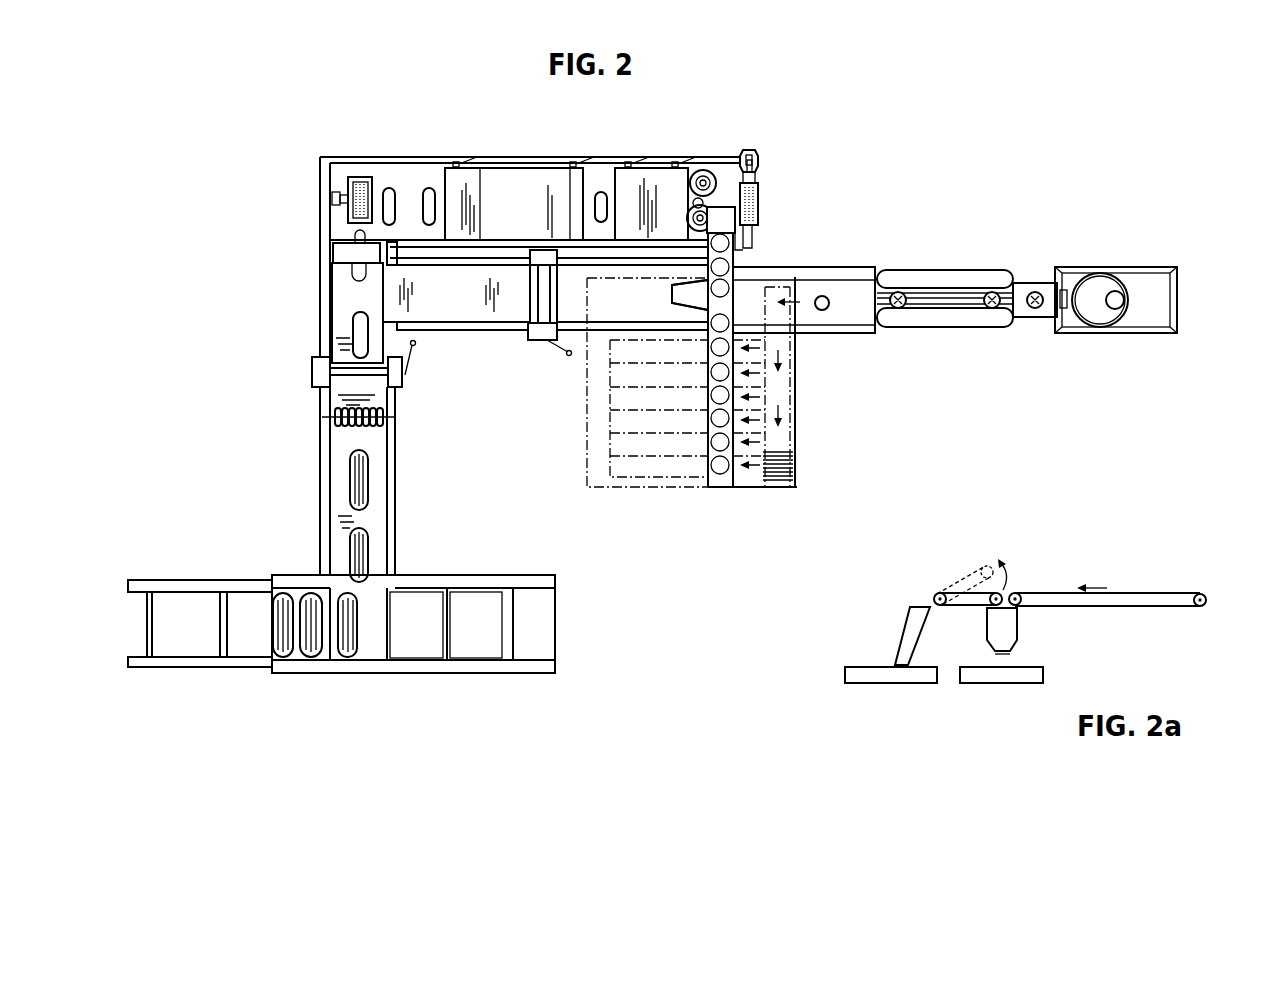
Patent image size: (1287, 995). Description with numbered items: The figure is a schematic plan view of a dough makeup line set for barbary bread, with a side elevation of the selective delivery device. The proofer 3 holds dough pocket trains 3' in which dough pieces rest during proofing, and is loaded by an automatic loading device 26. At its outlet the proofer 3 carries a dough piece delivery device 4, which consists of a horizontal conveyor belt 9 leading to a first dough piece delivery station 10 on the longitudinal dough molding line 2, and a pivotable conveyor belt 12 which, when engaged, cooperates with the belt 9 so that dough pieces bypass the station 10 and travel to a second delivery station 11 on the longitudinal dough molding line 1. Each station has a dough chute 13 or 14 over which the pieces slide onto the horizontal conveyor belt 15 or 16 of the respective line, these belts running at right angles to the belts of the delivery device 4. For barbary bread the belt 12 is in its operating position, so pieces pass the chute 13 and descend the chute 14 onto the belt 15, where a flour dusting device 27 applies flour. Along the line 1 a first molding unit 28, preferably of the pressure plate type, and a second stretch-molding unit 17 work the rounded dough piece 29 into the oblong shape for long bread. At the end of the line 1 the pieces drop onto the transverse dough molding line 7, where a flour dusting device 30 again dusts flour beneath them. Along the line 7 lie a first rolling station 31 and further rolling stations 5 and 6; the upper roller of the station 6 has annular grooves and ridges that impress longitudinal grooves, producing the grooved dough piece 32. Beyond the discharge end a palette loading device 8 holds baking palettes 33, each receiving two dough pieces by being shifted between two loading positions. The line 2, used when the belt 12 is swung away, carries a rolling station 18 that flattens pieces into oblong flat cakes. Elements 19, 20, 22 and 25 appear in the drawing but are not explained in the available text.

In FIG. 2, the longitudinal dough molding line 1 is at (543, 160).
In FIG. 2A, the longitudinal dough molding line 1 is at (903, 676).
In FIG. 2, the longitudinal dough molding line 2 is at (462, 333).
In FIG. 2A, the longitudinal dough molding line 2 is at (1012, 676).
In FIG. 2, the proofer 3 is at (770, 382).
In FIG. 2, the dough pocket train 3' is at (676, 406).
In FIG. 2, the dough piece delivery device 4 is at (730, 288).
In FIG. 2A, the dough piece delivery device 4 is at (901, 573).
In FIG. 2, the rolling station 5 is at (313, 374).
In FIG. 2, the rolling station 6 is at (333, 417).
In FIG. 2, the transverse dough molding line 7 is at (330, 453).
In FIG. 2, the palette loading device 8 is at (310, 571).
In FIG. 2, the horizontal conveyor belt 9 is at (720, 489).
In FIG. 2A, the horizontal conveyor belt 9 is at (1150, 598).
In FIG. 2, the dough piece delivery station 10 is at (672, 298).
In FIG. 2A, the dough piece delivery station 10 is at (1027, 659).
In FIG. 2, the dough piece delivery station 11 is at (724, 182).
In FIG. 2A, the dough piece delivery station 11 is at (877, 659).
In FIG. 2, the pivotable conveyor belt 12 is at (737, 256).
In FIG. 2A, the pivotable conveyor belt 12 is at (975, 596).
In FIG. 2, the dough chute 13 is at (704, 295).
In FIG. 2A, the dough chute 13 is at (1012, 622).
In FIG. 2, the dough chute 14 is at (730, 215).
In FIG. 2A, the dough chute 14 is at (905, 632).
In FIG. 2, the horizontal conveyor belt 15 is at (600, 178).
In FIG. 2, the horizontal conveyor belt 16 is at (498, 322).
In FIG. 2, the molding unit 17 is at (505, 185).
In FIG. 2, the rolling station 18 is at (541, 341).
In FIG. 2, the panel 19 is at (380, 170).
In FIG. 2, the slide block 20 is at (350, 297).
In FIG. 2, the drive unit 22 is at (1112, 268).
In FIG. 2, the linkage rods 25 is at (905, 271).
In FIG. 2, the automatic loading device 26 is at (843, 268).
In FIG. 2, the flour dusting device 27 is at (758, 203).
In FIG. 2, the molding unit 28 is at (665, 185).
In FIG. 2, the dough piece 29 is at (428, 188).
In FIG. 2, the flour dusting device 30 is at (355, 182).
In FIG. 2, the rolling station 31 is at (335, 253).
In FIG. 2, the grooved molded dough piece 32 is at (370, 473).
In FIG. 2, the baking palette 33 is at (420, 605).